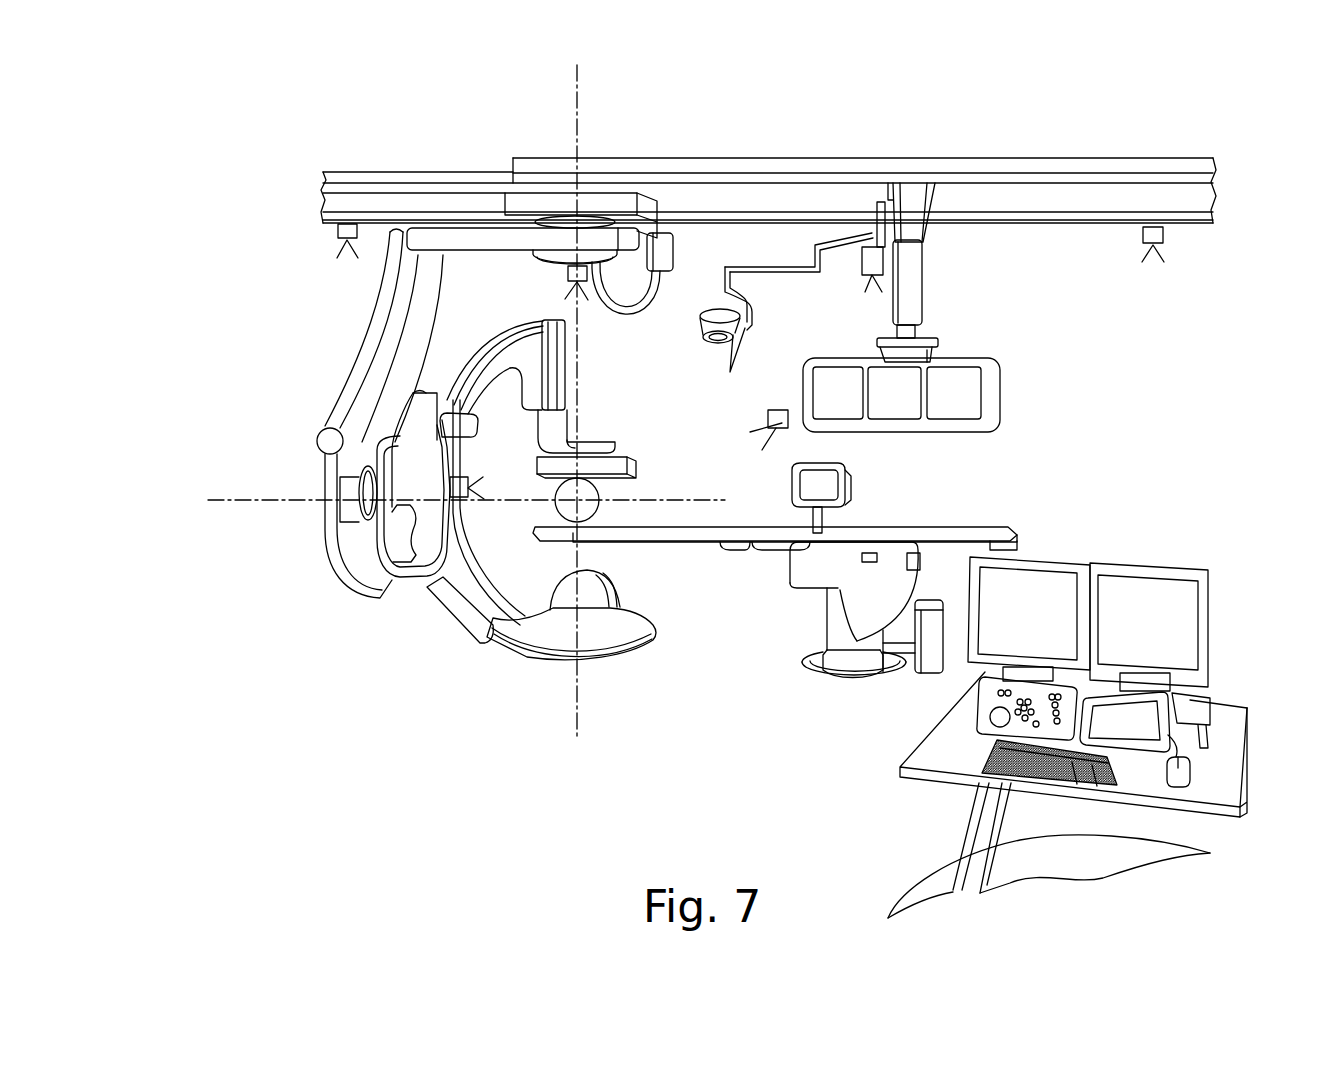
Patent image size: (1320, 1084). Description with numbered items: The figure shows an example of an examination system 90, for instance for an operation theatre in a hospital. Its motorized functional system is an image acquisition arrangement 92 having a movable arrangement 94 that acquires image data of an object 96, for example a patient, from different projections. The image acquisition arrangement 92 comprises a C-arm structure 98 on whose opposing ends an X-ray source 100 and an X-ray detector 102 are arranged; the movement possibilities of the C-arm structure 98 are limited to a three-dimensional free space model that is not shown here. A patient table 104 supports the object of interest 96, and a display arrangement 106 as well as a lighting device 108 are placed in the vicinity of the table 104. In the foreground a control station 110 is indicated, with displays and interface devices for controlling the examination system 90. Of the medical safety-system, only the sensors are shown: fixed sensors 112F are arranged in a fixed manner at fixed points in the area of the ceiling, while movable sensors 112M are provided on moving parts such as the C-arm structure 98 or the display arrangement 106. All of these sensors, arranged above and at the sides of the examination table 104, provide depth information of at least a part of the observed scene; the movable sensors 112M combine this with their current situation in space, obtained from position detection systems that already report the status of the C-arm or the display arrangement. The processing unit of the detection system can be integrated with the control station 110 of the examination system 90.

The examination system 90 is at (1100, 372).
The image acquisition arrangement 92 is at (205, 441).
The movable arrangement 94 is at (432, 700).
The object 96 is at (596, 498).
The C-arm structure 98 is at (473, 353).
The X-ray source 100 is at (610, 580).
The X-ray detector 102 is at (628, 458).
The patient table 104 is at (920, 530).
The display arrangement 106 is at (957, 373).
The lighting device 108 is at (703, 327).
The control station 110 is at (1150, 567).
The fixed sensors 112F is at (1237, 283).
The movable sensors 112M is at (868, 268).